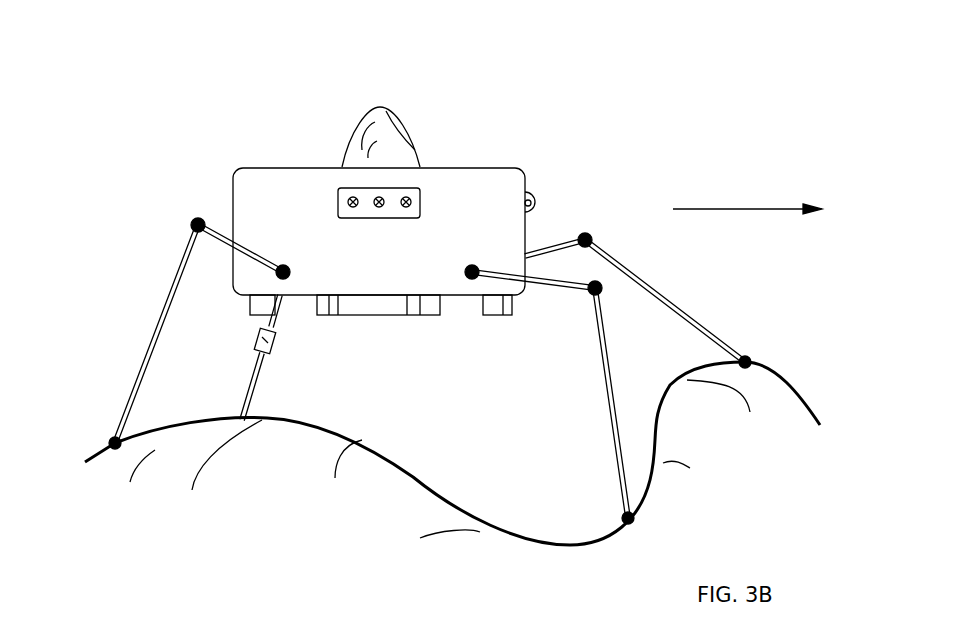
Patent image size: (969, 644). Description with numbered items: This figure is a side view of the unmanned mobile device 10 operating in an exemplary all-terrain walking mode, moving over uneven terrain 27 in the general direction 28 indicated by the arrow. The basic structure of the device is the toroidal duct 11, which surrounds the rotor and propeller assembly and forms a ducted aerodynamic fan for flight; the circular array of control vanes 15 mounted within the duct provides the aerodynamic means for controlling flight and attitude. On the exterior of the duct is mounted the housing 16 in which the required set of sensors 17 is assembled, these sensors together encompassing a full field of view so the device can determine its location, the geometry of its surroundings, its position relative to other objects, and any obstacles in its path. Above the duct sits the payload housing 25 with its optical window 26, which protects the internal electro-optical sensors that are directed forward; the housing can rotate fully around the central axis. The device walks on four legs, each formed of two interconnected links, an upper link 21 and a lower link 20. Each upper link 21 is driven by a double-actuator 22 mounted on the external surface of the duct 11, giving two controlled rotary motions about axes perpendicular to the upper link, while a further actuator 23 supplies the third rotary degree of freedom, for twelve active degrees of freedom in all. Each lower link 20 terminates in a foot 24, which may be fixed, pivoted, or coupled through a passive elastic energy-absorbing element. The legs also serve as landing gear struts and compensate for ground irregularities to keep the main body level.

The unmanned mobile device 10 is at (247, 103).
The toroidal duct 11 is at (475, 185).
The control vanes 15 is at (268, 305).
The sensor housing 16 is at (338, 205).
The sensors 17 is at (350, 198).
The lower link 20 is at (157, 325).
The upper link 21 is at (235, 245).
The double-actuator 22 is at (290, 272).
The actuator 23 is at (196, 222).
The foot 24 is at (120, 440).
The payload housing 25 is at (348, 140).
The optical window 26 is at (410, 120).
The uneven terrain 27 is at (775, 412).
The general direction 28 is at (735, 210).